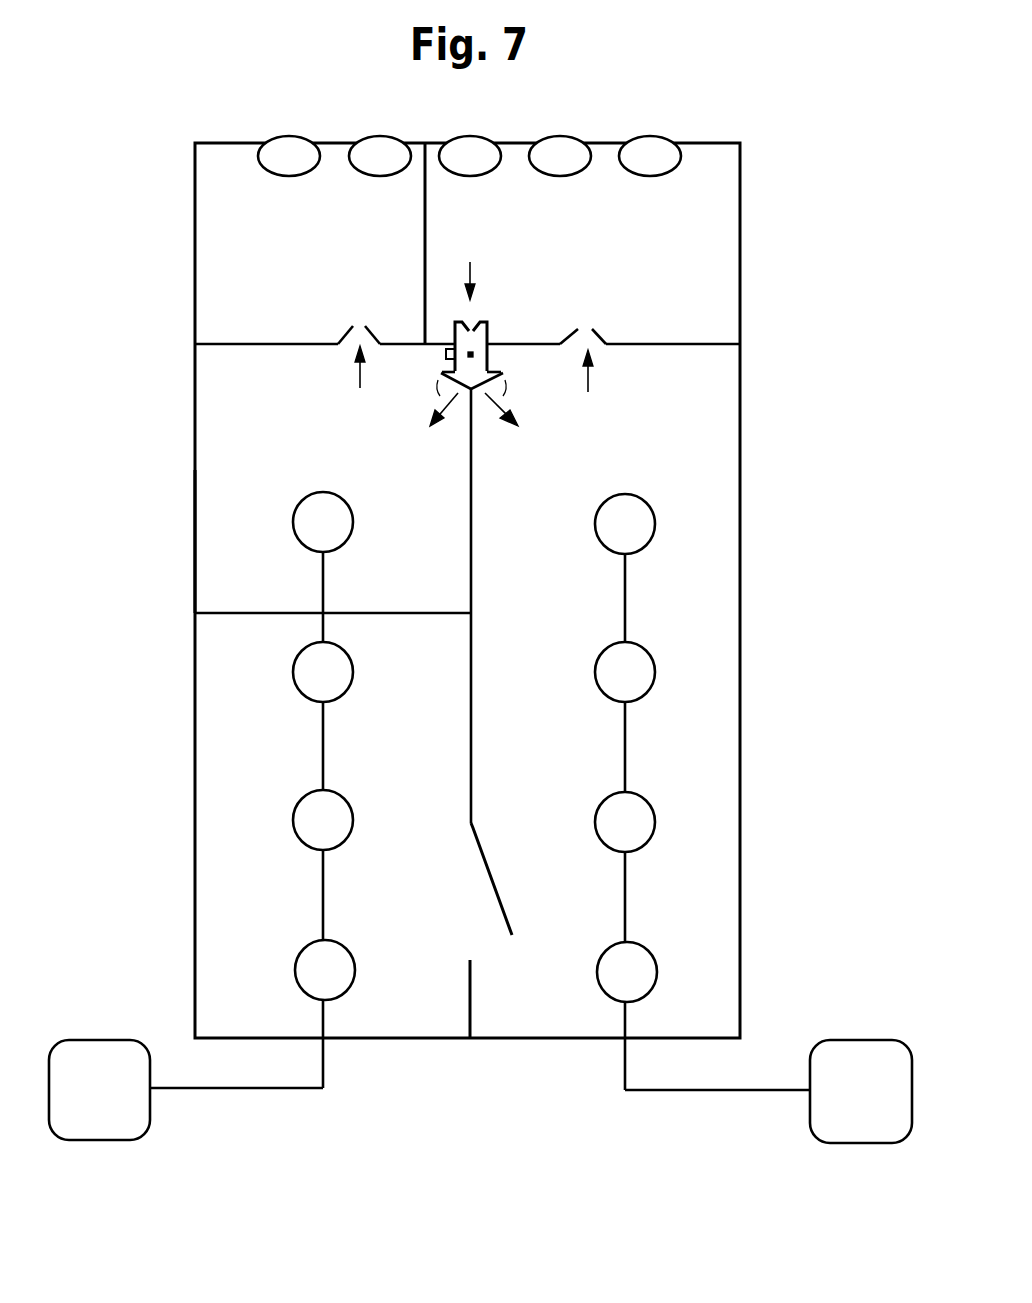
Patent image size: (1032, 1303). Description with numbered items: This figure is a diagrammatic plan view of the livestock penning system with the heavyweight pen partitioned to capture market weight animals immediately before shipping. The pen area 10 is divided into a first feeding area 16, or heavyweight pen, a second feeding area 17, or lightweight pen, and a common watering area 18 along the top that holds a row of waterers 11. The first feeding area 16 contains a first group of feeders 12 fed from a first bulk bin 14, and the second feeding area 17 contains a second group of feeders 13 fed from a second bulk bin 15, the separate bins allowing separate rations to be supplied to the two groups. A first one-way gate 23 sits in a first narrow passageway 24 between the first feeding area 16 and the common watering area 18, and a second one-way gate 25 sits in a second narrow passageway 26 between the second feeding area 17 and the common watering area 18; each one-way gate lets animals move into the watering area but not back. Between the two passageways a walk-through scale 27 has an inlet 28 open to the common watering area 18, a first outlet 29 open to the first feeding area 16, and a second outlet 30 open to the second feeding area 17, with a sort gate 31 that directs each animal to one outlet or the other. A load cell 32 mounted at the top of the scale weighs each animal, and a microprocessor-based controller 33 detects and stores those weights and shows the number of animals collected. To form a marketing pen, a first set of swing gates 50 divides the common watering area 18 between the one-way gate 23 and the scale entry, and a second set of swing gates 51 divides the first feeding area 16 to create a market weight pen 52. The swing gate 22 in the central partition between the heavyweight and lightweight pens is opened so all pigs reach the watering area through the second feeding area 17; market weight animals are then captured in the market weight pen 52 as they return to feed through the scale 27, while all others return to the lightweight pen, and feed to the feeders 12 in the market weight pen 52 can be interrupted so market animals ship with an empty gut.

The pen area 10 is at (138, 811).
The waterers 11 is at (272, 170).
The first group of feeders 12 is at (352, 527).
The second group of feeders 13 is at (606, 982).
The first bulk bin 14 is at (133, 1125).
The second bulk bin 15 is at (828, 1128).
The first feeding area 16 is at (257, 397).
The second feeding area 17 is at (688, 413).
The common watering area 18 is at (258, 247).
The swing gate 22 is at (503, 907).
The first one-way gate 23 is at (347, 330).
The first narrow passageway 24 is at (347, 350).
The second one-way gate 25 is at (596, 333).
The second narrow passageway 26 is at (597, 348).
The walk-through scale 27 is at (490, 335).
The inlet 28 is at (474, 332).
The first outlet 29 is at (450, 375).
The second outlet 30 is at (497, 375).
The sort gate 31 is at (479, 392).
The load cell 32 is at (475, 355).
The microprocessor-based controller 33 is at (446, 353).
The first set of swing gates 50 is at (427, 258).
The second set of swing gates 51 is at (244, 613).
The market weight pen 52 is at (225, 507).